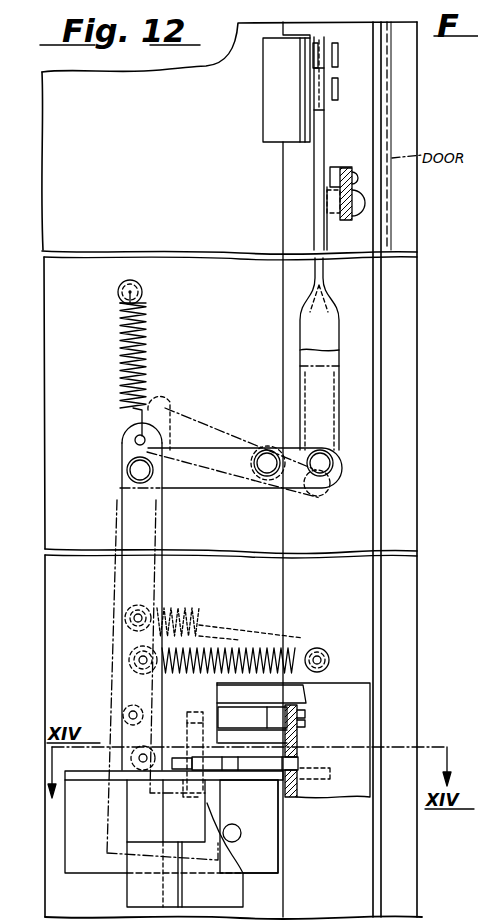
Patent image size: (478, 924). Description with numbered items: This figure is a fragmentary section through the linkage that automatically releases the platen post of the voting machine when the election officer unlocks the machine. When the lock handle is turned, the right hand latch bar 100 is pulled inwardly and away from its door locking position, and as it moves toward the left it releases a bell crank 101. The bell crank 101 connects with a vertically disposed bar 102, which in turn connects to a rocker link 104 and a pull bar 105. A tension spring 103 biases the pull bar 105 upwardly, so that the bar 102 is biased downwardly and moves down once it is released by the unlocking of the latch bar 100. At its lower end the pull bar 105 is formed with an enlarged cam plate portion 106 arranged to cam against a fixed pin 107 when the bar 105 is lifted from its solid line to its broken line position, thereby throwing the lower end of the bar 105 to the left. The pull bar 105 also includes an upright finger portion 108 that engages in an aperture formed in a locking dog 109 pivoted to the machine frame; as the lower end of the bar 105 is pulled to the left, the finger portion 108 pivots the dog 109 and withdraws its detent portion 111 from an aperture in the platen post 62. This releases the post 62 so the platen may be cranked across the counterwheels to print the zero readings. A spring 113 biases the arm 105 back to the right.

The latch bar 100 is at (352, 217).
The bell crank 101 is at (328, 130).
The vertically disposed bar 102 is at (302, 307).
The tension spring 103 is at (120, 350).
The rocker link 104 is at (198, 485).
The pull bar 105 is at (118, 618).
The cam plate portion 106 is at (278, 864).
The fixed pin 107 is at (244, 812).
The upright finger portion 108 is at (195, 711).
The locking dog 109 is at (265, 762).
The detent portion 111 is at (303, 762).
The spring 113 is at (210, 647).
The platen post 62 is at (290, 800).